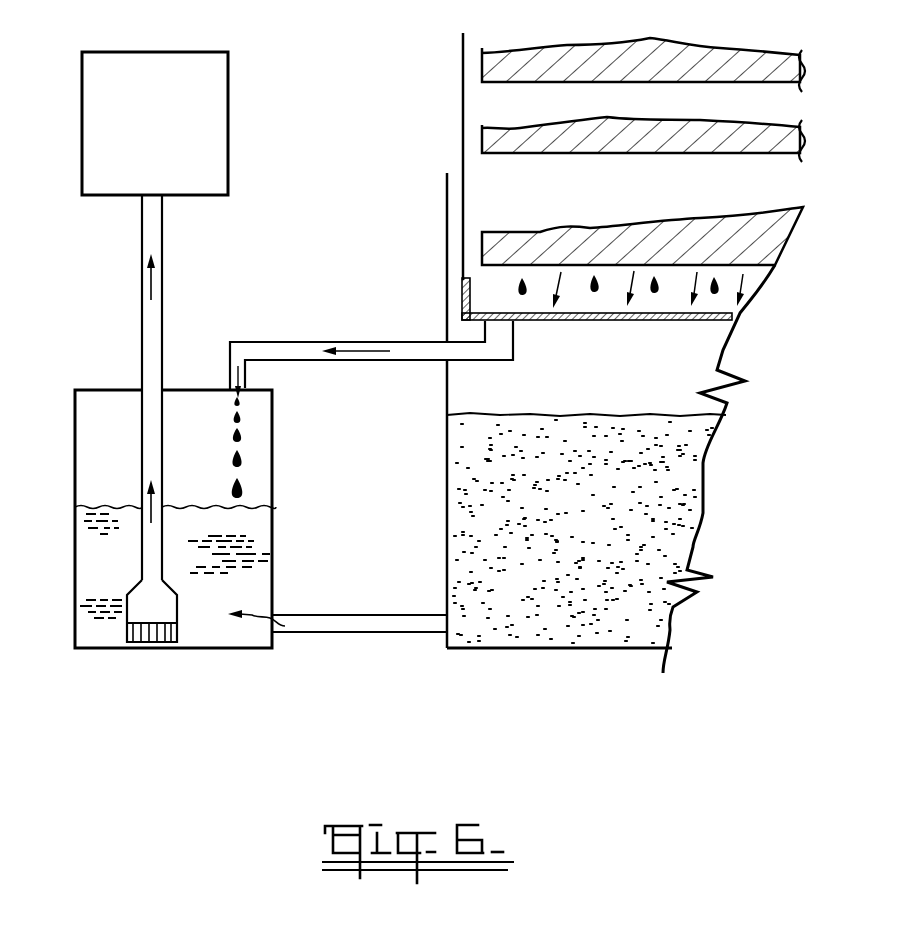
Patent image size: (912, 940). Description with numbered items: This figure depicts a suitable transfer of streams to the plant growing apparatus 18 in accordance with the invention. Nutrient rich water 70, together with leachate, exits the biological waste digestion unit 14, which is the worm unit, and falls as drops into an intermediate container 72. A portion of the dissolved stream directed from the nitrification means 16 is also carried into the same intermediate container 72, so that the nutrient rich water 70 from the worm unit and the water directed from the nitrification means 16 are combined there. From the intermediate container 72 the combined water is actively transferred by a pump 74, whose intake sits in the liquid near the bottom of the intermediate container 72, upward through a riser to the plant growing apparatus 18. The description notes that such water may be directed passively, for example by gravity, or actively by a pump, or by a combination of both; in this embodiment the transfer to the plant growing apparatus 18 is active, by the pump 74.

The biological waste digestion unit 14 is at (828, 166).
The nitrification means 16 is at (577, 617).
The plant growing apparatus 18 is at (140, 132).
The nutrient rich water 70 is at (240, 459).
The intermediate container 72 is at (75, 485).
The pump 74 is at (160, 608).